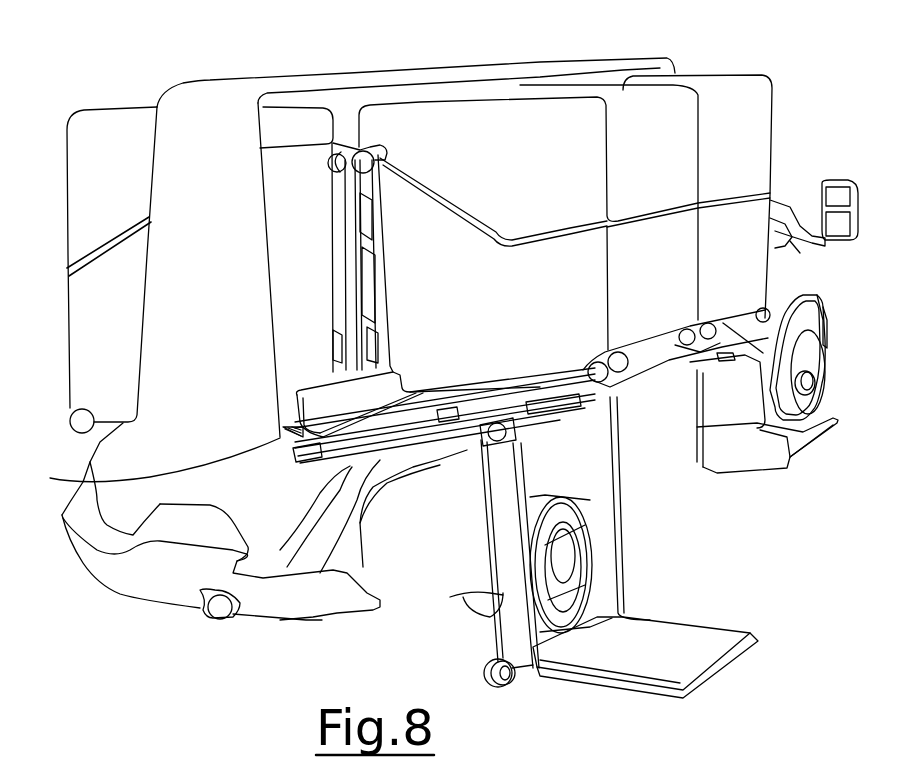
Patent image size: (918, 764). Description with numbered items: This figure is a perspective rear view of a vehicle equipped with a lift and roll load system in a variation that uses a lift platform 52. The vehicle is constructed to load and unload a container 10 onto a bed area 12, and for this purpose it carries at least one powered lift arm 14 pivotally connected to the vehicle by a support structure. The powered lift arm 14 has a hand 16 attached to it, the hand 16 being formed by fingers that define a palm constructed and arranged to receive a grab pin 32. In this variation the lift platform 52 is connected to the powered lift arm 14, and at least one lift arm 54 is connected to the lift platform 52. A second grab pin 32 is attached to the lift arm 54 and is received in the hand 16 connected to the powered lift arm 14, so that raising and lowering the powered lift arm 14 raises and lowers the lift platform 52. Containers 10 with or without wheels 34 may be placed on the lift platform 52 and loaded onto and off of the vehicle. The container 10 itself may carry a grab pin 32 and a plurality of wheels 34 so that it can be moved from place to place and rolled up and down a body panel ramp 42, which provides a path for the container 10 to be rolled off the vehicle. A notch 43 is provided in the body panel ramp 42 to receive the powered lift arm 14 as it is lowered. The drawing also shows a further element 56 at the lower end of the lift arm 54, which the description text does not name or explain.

The container 10 is at (482, 135).
The bed area 12 is at (151, 321).
The powered lift arm 14 is at (384, 200).
The hand 16 is at (466, 442).
The grab pin 32 is at (353, 148).
The wheels 34 is at (612, 573).
The body panel ramp 42 is at (395, 572).
The notch 43 is at (355, 457).
The lift platform 52 is at (630, 667).
The lift arm 54 is at (503, 596).
The wheel 56 is at (523, 680).